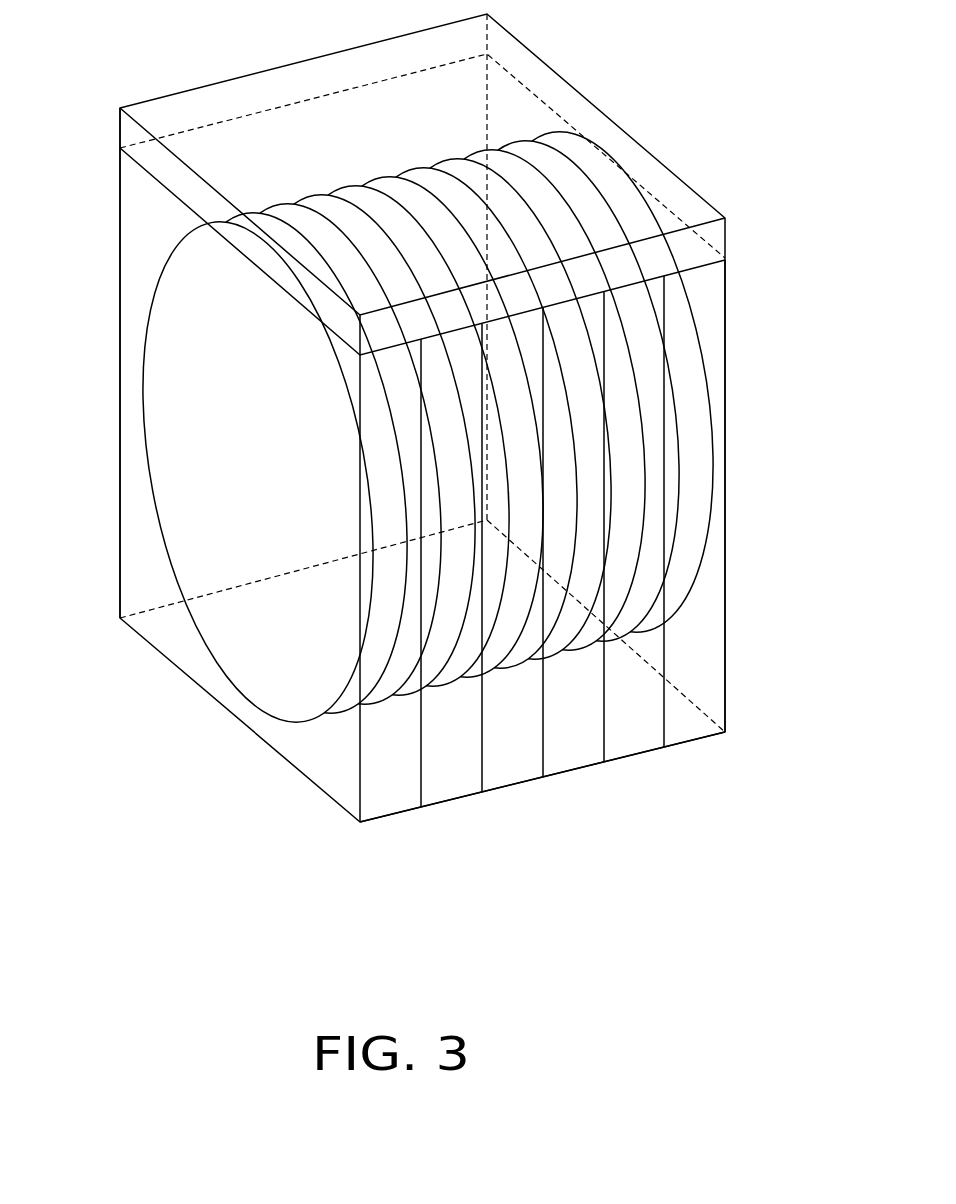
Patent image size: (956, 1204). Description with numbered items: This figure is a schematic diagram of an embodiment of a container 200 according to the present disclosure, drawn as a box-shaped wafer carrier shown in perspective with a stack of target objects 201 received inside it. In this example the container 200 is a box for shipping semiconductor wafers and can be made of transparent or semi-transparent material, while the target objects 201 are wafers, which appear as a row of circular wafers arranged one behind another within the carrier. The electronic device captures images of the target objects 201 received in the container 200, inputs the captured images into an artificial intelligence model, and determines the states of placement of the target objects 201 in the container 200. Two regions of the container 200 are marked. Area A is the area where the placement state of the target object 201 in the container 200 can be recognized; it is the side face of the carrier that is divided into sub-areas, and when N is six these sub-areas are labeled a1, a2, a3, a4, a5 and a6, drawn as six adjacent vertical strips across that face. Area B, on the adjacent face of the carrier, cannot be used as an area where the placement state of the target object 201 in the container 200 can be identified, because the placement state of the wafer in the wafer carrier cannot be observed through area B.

The container 200 is at (370, 60).
The target object 201 is at (698, 341).
The area B is at (136, 279).
The area A is at (716, 638).
The sub-area a1 is at (393, 802).
The sub-area a2 is at (460, 787).
The sub-area a3 is at (522, 763).
The sub-area a4 is at (582, 745).
The sub-area a5 is at (642, 733).
The sub-area a6 is at (690, 720).